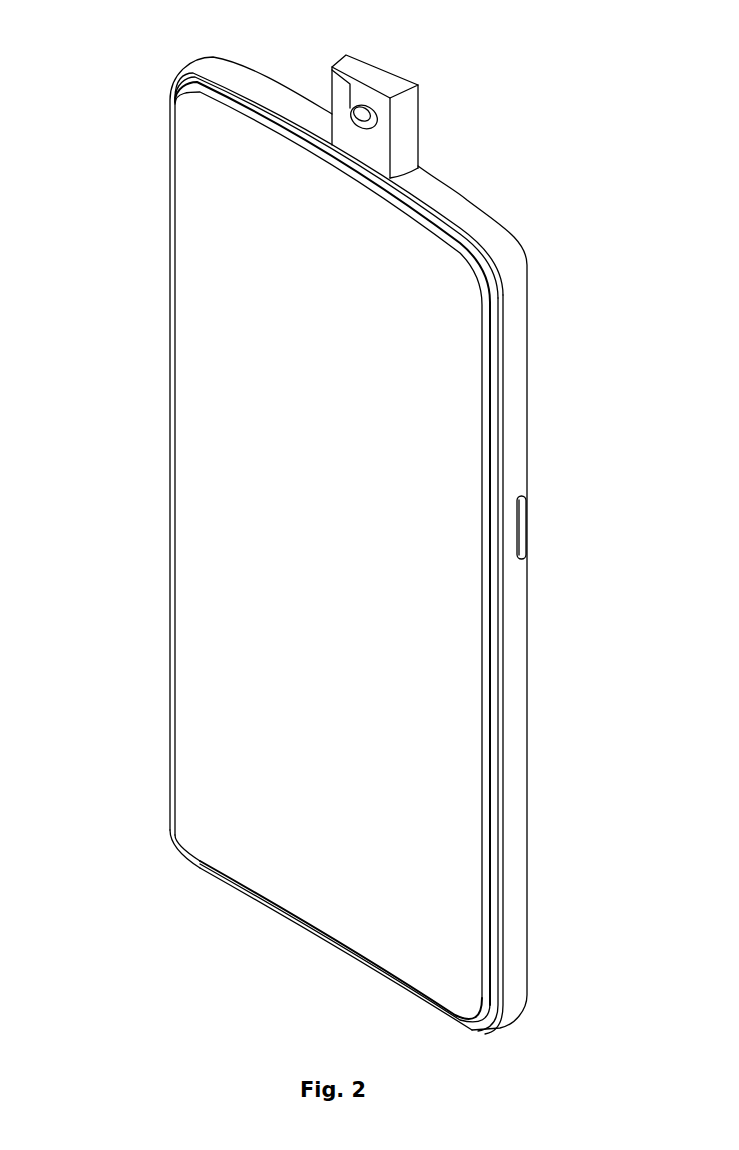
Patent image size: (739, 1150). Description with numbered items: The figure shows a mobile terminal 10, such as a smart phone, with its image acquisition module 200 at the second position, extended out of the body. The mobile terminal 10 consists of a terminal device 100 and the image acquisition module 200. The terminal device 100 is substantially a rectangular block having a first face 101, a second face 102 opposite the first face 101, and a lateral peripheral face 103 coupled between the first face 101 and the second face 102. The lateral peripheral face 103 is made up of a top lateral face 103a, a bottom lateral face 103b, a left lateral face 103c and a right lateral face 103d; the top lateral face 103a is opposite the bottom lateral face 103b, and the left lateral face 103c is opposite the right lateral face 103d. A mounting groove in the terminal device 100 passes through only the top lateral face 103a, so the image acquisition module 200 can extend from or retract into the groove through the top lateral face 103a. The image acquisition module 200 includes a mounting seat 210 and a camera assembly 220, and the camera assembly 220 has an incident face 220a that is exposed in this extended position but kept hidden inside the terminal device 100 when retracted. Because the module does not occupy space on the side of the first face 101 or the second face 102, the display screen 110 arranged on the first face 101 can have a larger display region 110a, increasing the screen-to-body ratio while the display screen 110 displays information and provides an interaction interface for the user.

The mobile terminal 10 is at (80, 31).
The terminal device 100 is at (528, 250).
The first face 101 is at (463, 392).
The second face 102 is at (528, 450).
The lateral peripheral face 103 is at (513, 307).
The top lateral face 103a is at (462, 199).
The bottom lateral face 103b is at (278, 923).
The left lateral face 103c is at (170, 467).
The right lateral face 103d is at (515, 628).
The display screen 110 is at (185, 264).
The display region 110a is at (203, 362).
The image acquisition module 200 is at (392, 83).
The mounting seat 210 is at (425, 105).
The camera assembly 220 is at (347, 60).
The incident face 220a is at (332, 85).